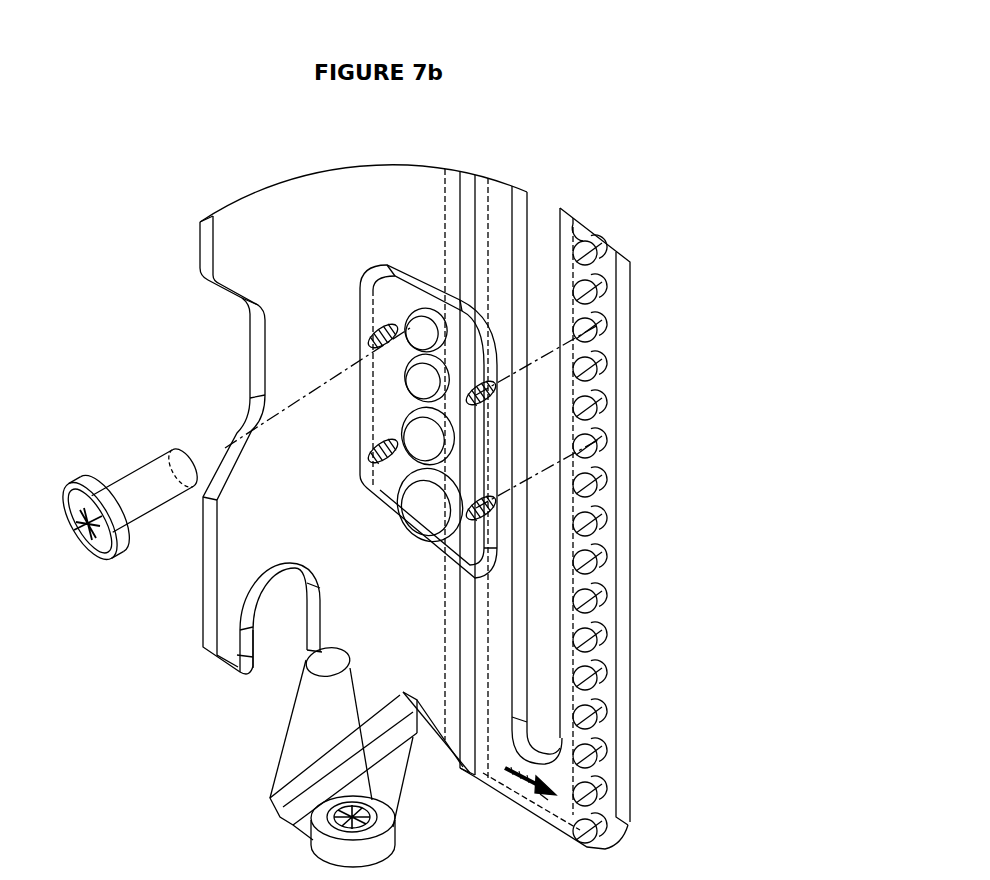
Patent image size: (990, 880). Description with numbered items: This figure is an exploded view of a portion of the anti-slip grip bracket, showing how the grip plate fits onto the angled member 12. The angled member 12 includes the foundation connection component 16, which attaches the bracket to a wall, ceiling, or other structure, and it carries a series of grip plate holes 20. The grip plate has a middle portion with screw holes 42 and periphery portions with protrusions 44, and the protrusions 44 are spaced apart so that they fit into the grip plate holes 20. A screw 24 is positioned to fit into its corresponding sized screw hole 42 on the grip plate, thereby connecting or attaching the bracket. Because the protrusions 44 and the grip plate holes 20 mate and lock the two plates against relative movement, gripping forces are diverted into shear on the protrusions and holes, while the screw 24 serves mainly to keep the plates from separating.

The angled member 12 is at (694, 548).
The foundation connection component 16 is at (636, 738).
The grip plate holes 20 is at (338, 280).
The screw 24 is at (122, 461).
The screw hole 42 is at (413, 320).
The protrusions 44 is at (500, 392).